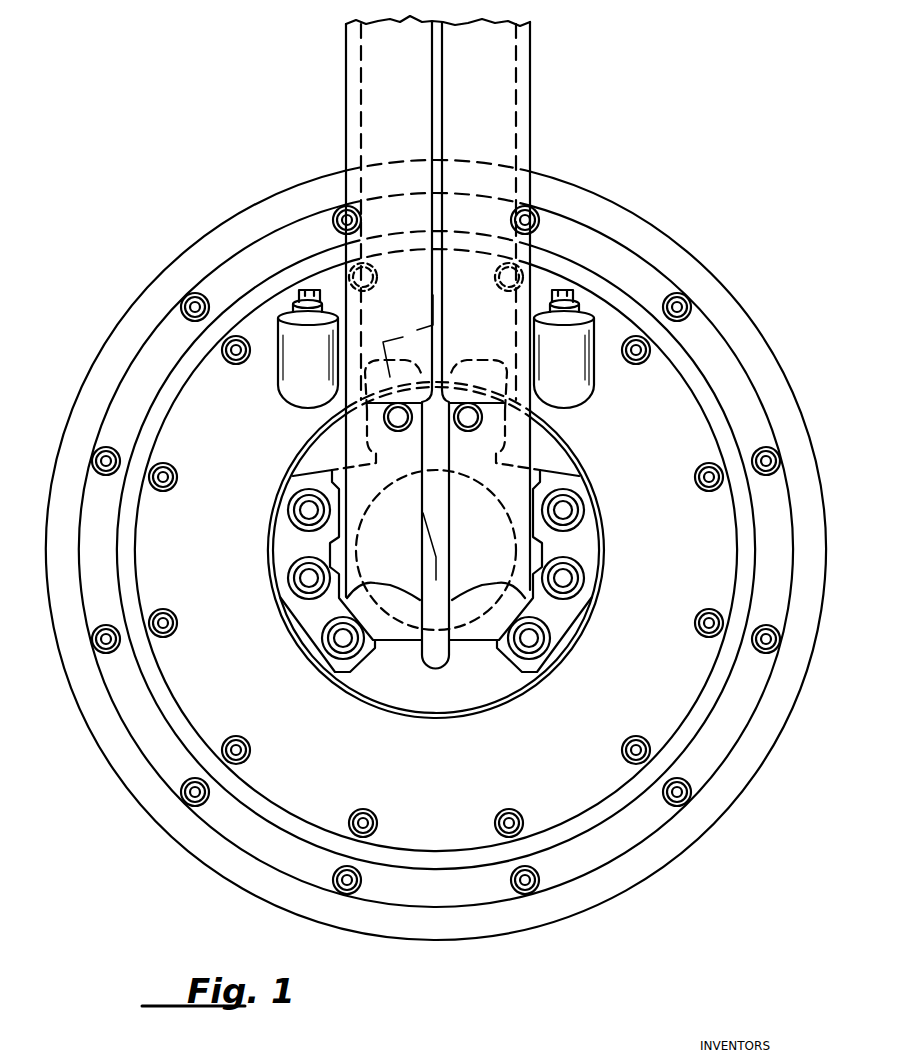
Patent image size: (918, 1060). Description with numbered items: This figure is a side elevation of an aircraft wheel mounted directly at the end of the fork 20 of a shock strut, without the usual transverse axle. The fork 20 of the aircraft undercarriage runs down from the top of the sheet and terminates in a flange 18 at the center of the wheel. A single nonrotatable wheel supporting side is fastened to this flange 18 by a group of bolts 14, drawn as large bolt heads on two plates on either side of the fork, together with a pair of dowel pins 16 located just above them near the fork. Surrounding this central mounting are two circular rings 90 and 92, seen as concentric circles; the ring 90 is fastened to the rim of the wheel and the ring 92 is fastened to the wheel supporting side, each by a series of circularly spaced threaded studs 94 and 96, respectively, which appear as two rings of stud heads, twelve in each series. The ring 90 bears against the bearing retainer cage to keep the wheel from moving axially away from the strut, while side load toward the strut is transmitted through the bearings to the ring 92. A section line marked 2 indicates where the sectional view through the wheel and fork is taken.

The section line 2- 2 is at (547, 5).
The bolts 14 is at (292, 577).
The dowel pins 16 is at (471, 428).
The flange 18 is at (372, 656).
The fork 20 is at (532, 79).
The circular ring 90 is at (267, 248).
The circular ring 92 is at (680, 395).
The threaded studs 94 is at (666, 806).
The threaded studs 96 is at (634, 736).